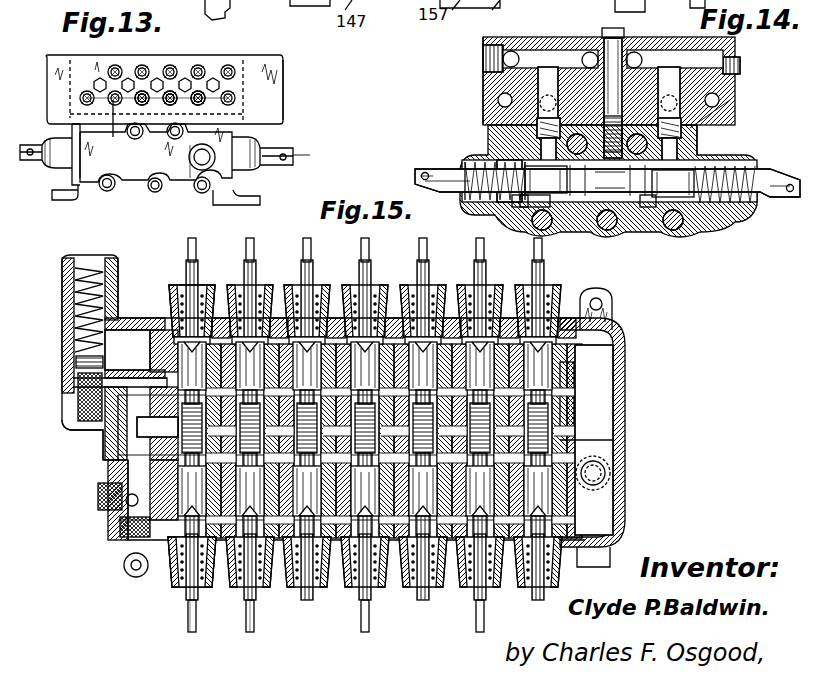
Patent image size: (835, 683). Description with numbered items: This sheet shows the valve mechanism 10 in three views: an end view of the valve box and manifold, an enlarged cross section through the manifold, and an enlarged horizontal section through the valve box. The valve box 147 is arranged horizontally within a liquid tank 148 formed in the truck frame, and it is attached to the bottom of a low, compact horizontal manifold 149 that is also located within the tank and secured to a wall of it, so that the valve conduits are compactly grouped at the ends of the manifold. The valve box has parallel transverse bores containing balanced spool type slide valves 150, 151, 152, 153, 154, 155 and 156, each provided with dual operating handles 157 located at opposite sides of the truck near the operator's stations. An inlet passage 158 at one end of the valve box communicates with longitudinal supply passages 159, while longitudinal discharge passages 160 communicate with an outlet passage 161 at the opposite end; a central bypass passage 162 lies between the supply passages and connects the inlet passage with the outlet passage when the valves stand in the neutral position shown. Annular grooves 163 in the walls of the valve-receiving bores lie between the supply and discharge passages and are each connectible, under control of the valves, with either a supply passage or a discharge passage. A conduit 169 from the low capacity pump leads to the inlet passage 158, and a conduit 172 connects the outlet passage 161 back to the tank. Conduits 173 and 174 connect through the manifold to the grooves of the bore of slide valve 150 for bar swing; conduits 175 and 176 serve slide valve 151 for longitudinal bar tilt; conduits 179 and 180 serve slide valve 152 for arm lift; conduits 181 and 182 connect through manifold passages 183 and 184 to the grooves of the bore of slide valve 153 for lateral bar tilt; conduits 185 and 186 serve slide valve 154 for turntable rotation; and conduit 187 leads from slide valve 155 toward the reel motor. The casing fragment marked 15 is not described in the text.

In FIG. 13, the valve mechanism 10 is at (152, 49).
In FIG. 14, the valve mechanism 10 is at (476, 84).
In FIG. 15, the valve mechanism 10 is at (620, 327).
In FIG. 13, the casing 15 is at (226, 20).
In FIG. 14, the casing 15 is at (645, 11).
In FIG. 13, the valve box 147 is at (140, 165).
In FIG. 14, the valve box 147 is at (690, 215).
In FIG. 15, the valve box 147 is at (112, 468).
In FIG. 13, the liquid tank 148 is at (283, 73).
In FIG. 13, the manifold 149 is at (250, 66).
In FIG. 14, the manifold 149 is at (483, 96).
In FIG. 15, the slide valve 150 is at (218, 285).
In FIG. 15, the slide valve 151 is at (278, 288).
In FIG. 15, the slide valve 152 is at (334, 290).
In FIG. 14, the slide valve 153 is at (500, 160).
In FIG. 15, the slide valve 153 is at (392, 290).
In FIG. 15, the slide valve 154 is at (452, 292).
In FIG. 15, the slide valve 155 is at (511, 292).
In FIG. 15, the slide valve 156 is at (572, 294).
In FIG. 13, the operating handles 157 is at (322, 153).
In FIG. 14, the operating handles 157 is at (760, 170).
In FIG. 15, the operating handles 157 is at (365, 635).
In FIG. 15, the inlet passage 158 is at (122, 445).
In FIG. 14, the supply passages 159 is at (570, 215).
In FIG. 15, the supply passages 159 is at (170, 395).
In FIG. 14, the discharge passages 160 is at (490, 210).
In FIG. 15, the discharge passages 160 is at (178, 290).
In FIG. 15, the outlet passage 161 is at (600, 415).
In FIG. 14, the bypass passage 162 is at (730, 100).
In FIG. 15, the bypass passage 162 is at (567, 440).
In FIG. 14, the annular grooves 163 is at (545, 215).
In FIG. 15, the annular grooves 163 is at (165, 335).
In FIG. 15, the conduit 169 is at (125, 572).
In FIG. 15, the conduit 172 is at (605, 480).
In FIG. 13, the conduit 173 is at (202, 106).
In FIG. 13, the conduit 174 is at (114, 131).
In FIG. 13, the conduit 175 is at (208, 53).
In FIG. 13, the conduit 176 is at (118, 65).
In FIG. 13, the conduit 179 is at (147, 104).
In FIG. 13, the conduit 180 is at (173, 104).
In FIG. 13, the conduit 181 is at (142, 65).
In FIG. 13, the conduit 182 is at (172, 67).
In FIG. 14, the manifold passage 183 is at (587, 52).
In FIG. 14, the manifold passage 184 is at (638, 56).
In FIG. 13, the conduit 185 is at (230, 102).
In FIG. 13, the conduit 186 is at (82, 102).
In FIG. 13, the conduit 187 is at (240, 53).